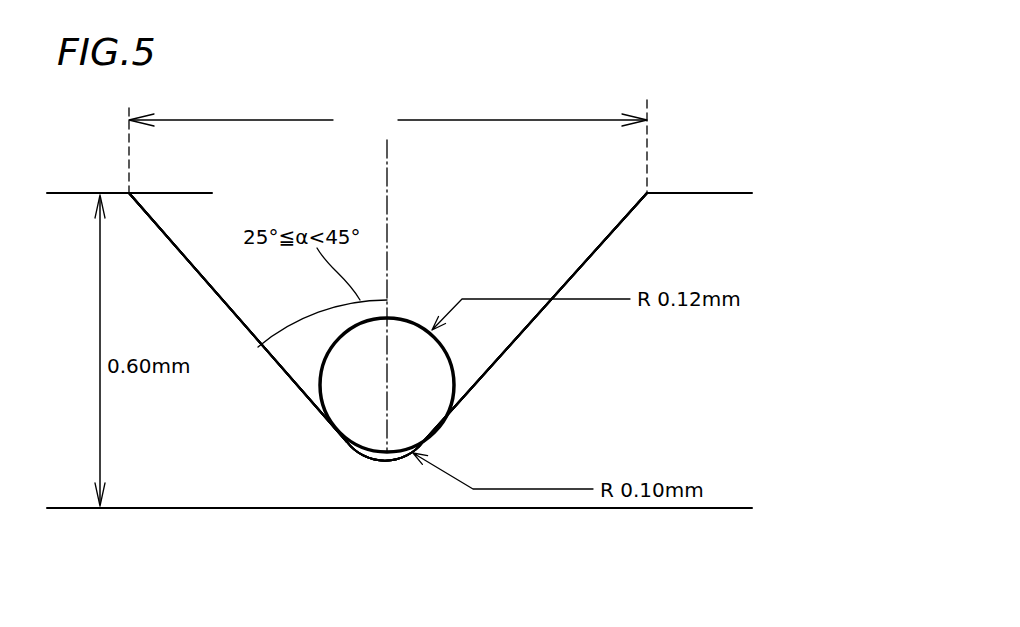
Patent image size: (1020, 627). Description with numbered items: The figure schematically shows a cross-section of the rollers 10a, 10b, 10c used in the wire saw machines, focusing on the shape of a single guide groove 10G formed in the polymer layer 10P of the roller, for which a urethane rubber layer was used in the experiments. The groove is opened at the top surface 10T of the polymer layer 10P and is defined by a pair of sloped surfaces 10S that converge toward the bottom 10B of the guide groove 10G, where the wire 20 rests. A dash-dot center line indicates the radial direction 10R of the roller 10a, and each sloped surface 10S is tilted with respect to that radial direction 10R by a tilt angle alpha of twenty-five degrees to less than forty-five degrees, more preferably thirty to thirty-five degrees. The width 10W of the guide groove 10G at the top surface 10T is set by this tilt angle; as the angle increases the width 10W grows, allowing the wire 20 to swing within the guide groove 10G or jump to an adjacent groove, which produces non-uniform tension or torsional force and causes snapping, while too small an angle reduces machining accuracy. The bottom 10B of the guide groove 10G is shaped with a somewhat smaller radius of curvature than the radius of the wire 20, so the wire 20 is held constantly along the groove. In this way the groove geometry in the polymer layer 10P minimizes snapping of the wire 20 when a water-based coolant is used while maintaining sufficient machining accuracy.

The top surface 10T is at (48, 192).
The polymer layer 10P is at (683, 225).
The width of the guide groove 10W is at (388, 146).
The radial direction of the roller 10R is at (389, 200).
The guide groove 10G is at (496, 194).
The sloped surfaces 10S is at (228, 302).
The bottom of the guide groove 10B is at (387, 456).
The wire 20 is at (397, 338).
The roller 10a is at (721, 168).
The roller 10b is at (481, 287).
The roller 10c is at (508, 287).